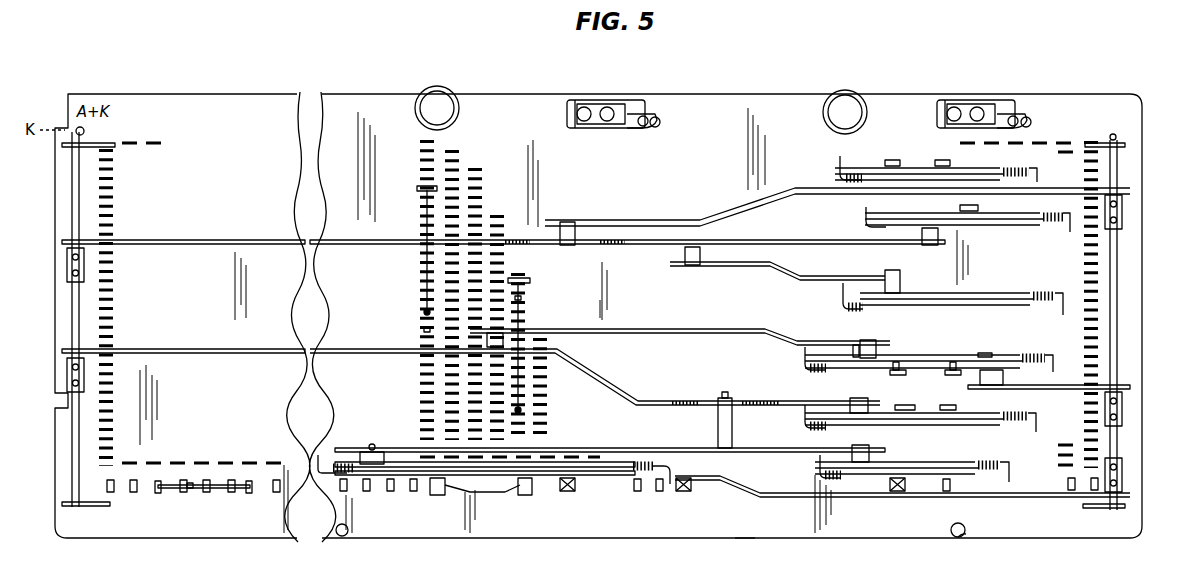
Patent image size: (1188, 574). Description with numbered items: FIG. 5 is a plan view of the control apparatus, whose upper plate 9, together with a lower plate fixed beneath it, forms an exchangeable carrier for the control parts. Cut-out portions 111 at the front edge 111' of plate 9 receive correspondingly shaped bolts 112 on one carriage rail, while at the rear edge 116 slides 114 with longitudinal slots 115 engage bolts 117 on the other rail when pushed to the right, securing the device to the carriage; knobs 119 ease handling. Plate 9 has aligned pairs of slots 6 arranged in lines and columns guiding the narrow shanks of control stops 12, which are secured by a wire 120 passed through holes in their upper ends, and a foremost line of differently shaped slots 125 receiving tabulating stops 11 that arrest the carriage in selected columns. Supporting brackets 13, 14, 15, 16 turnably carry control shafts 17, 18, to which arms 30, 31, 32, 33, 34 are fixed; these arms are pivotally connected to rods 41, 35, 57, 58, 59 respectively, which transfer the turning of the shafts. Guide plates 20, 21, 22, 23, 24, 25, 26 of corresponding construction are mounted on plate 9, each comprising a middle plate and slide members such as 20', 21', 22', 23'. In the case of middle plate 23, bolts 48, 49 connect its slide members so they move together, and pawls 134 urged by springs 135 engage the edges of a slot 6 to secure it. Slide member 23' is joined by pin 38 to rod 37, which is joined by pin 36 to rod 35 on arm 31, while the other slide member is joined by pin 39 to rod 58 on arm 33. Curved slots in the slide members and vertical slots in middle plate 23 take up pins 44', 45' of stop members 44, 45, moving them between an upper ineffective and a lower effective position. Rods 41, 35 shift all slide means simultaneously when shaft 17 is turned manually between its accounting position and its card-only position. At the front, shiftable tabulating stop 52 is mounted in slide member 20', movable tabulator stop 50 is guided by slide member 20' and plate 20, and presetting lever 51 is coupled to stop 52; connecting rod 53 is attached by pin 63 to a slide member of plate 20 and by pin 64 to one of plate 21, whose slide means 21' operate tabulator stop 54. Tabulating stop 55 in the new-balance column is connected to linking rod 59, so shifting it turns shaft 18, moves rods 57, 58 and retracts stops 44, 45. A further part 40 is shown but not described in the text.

The slots 6 is at (118, 298).
The upper plate 9 is at (306, 94).
The tabulating stops 11 is at (158, 493).
The control stops 12 is at (420, 191).
The supporting bracket 13 is at (67, 146).
The supporting bracket 14 is at (62, 506).
The supporting bracket 15 is at (1125, 145).
The supporting bracket 16 is at (1125, 506).
The control shaft 17 is at (71, 322).
The control shaft 18 is at (1118, 270).
The guide plate 20 is at (476, 452).
The slide member 20' is at (628, 485).
The guide plate 21 is at (912, 459).
The slide member 21' is at (895, 496).
The guide plate 22 is at (920, 411).
The slide means 22' is at (958, 401).
The guide plate 23 is at (929, 354).
The slide member 23' is at (912, 336).
The guide plate 24 is at (980, 293).
The guide plate 25 is at (990, 226).
The guide plate 26 is at (920, 180).
The arm 30 is at (67, 266).
The arm 31 is at (67, 379).
The arm 32 is at (1122, 212).
The arm 33 is at (1122, 412).
The arm 34 is at (1122, 472).
The rod 35 is at (202, 348).
The pin 36 is at (505, 335).
The rod 37 is at (650, 329).
The pin 38 is at (870, 342).
The pin 39 is at (1004, 378).
The cylinder 40 is at (732, 428).
The rod 41 is at (212, 240).
The stop member 44 is at (883, 379).
The pin 44' is at (899, 347).
The stop member 45 is at (934, 379).
The pin 45' is at (957, 349).
The bolt 48 is at (985, 355).
The bolt 49 is at (855, 350).
The second movable tabulator stop 50 is at (568, 492).
The presetting lever 51 is at (433, 495).
The shiftable first tabulating stop 52 is at (524, 495).
The connecting rod 53 is at (665, 448).
The tabulator stop 54 is at (892, 490).
The tabulating stop 55 is at (683, 491).
The rod 57 is at (1055, 190).
The rod 58 is at (1045, 390).
The linking rod 59 is at (1005, 498).
The pin 63 is at (370, 452).
The pin 64 is at (872, 450).
The cut-out portions 111 is at (950, 547).
The front edge 111' is at (751, 549).
The bolts 112 is at (965, 535).
The slides 114 is at (567, 114).
The longitudinal slots 115 is at (643, 127).
The rear edge 116 is at (530, 94).
The bolts 117 is at (658, 117).
The knobs 119 is at (435, 87).
The wire 120 is at (524, 296).
The slots 125 is at (195, 489).
The pawls 134 is at (842, 292).
The springs 135 is at (1040, 293).